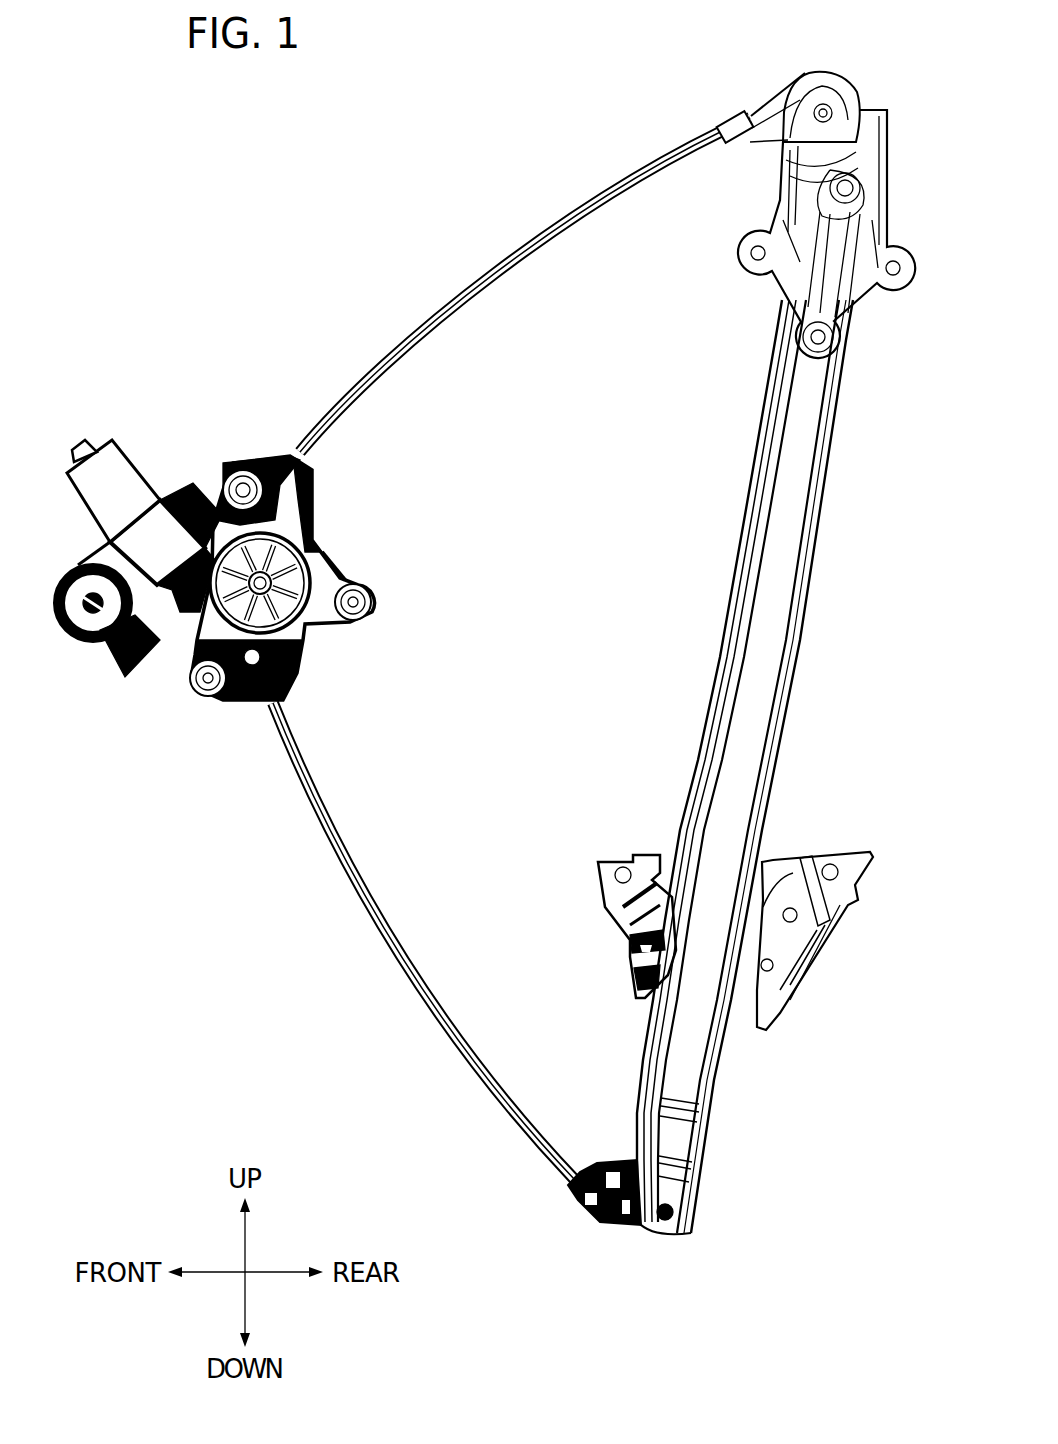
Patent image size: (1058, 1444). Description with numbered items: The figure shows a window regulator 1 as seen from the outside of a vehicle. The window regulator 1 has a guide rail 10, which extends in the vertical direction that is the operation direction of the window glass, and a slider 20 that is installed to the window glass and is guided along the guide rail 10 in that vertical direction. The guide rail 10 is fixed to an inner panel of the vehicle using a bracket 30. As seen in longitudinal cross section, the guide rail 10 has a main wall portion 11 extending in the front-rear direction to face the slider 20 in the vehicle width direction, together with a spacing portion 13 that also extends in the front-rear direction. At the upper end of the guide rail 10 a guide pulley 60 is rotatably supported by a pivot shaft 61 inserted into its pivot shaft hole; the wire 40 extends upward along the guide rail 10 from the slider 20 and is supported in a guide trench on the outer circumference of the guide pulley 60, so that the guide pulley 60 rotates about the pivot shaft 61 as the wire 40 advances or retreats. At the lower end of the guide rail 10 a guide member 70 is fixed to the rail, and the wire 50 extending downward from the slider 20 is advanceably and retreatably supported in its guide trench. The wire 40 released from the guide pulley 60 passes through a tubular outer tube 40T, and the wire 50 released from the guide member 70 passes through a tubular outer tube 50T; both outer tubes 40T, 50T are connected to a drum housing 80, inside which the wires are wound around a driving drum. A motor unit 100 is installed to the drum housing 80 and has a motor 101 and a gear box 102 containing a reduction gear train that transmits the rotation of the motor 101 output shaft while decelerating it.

The window regulator 1 is at (318, 244).
The guide rail 10 is at (814, 573).
The main wall portion 11 is at (804, 505).
The spacing portion 13 is at (758, 458).
The slider 20 is at (816, 856).
The bracket 30 is at (894, 230).
The wire 40 is at (526, 281).
The outer tube 40T is at (468, 290).
The wire 50 is at (424, 941).
The outer tube 50T is at (404, 986).
The guide pulley 60 is at (853, 80).
The pivot shaft 61 is at (824, 104).
The guide member 70 is at (613, 1228).
The drum housing 80 is at (297, 565).
The motor unit 100 is at (100, 436).
The motor 101 is at (133, 470).
The gear box 102 is at (150, 518).